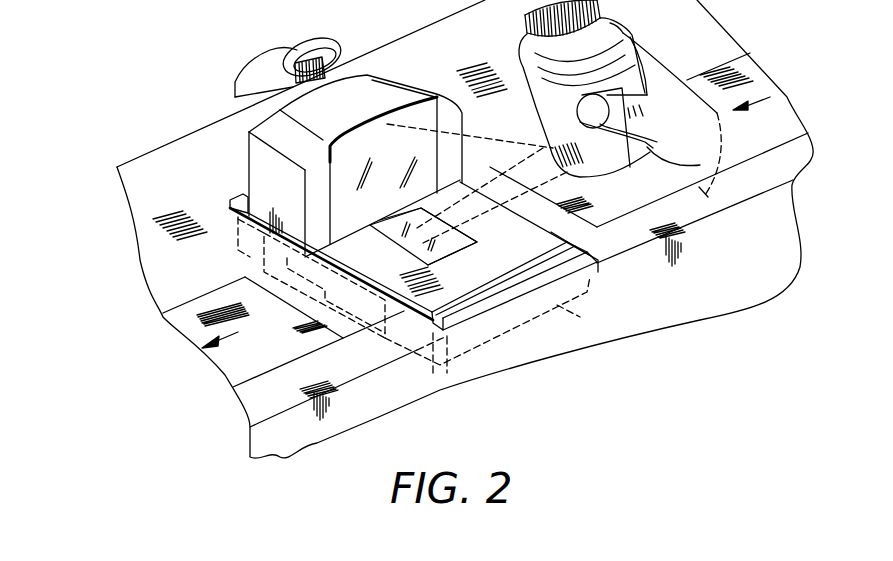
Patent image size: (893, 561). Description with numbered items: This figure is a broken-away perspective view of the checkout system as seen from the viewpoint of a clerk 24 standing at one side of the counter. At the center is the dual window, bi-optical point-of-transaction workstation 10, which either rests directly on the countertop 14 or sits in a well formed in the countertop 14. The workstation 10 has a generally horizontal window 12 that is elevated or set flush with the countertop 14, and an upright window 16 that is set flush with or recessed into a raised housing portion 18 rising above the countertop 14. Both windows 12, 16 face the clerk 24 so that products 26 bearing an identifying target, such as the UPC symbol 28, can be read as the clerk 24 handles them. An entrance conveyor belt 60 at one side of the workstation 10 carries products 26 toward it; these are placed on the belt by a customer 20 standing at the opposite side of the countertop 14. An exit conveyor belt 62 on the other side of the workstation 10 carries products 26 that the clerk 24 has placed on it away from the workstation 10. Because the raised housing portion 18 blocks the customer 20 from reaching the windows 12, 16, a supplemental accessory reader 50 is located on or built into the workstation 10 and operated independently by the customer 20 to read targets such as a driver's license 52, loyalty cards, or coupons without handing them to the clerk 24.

The point-of-transaction workstation 10 is at (403, 72).
The horizontal window 12 is at (440, 253).
The countertop 14 is at (620, 252).
The upright window 16 is at (390, 210).
The raised housing portion 18 is at (450, 113).
The customer 20 is at (258, 67).
The clerk 24 is at (716, 168).
The product 26 is at (597, 105).
The UPC symbol 28 is at (607, 176).
The accessory reader 50 is at (362, 75).
The driver's license 52 is at (310, 60).
The entrance conveyor belt 60 is at (667, 188).
The exit conveyor belt 62 is at (317, 343).